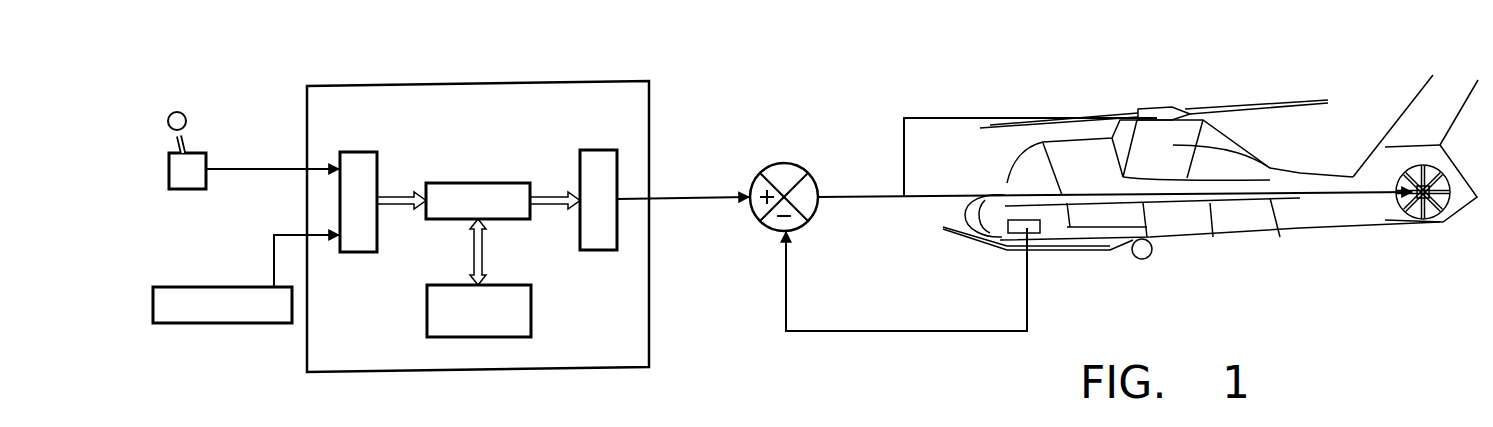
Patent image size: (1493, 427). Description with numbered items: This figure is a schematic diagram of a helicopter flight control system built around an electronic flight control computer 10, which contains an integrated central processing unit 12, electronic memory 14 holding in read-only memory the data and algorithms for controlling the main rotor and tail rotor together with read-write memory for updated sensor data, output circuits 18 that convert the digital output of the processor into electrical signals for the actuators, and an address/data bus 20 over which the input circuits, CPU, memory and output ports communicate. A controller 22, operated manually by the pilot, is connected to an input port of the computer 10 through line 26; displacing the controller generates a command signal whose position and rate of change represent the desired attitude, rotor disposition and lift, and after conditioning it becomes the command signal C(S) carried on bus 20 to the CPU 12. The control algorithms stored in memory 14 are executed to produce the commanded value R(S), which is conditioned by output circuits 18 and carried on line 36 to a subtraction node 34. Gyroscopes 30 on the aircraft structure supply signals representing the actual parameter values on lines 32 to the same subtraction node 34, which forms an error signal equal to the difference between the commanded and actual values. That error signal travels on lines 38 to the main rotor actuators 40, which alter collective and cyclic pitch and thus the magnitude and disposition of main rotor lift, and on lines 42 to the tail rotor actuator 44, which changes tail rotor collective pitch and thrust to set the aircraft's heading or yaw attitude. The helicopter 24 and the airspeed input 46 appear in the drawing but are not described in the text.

The computer 10 is at (650, 119).
The central processing unit 12 is at (474, 183).
The electronic memory 14 is at (531, 297).
The output circuits 18 is at (597, 150).
The address/data bus 20 is at (474, 248).
The controller 22 is at (172, 140).
The helicopter 24 is at (1250, 237).
The line 26 is at (252, 168).
The gyroscopes 30 is at (1040, 229).
The lines 32 is at (868, 332).
The subtraction node 34 is at (803, 228).
The line 36 is at (689, 200).
The lines 38 is at (1005, 118).
The main rotor actuators 40 is at (1155, 106).
The lines 42 is at (933, 199).
The tail rotor actuator 44 is at (1453, 173).
The airspeed sensor 46 is at (240, 323).